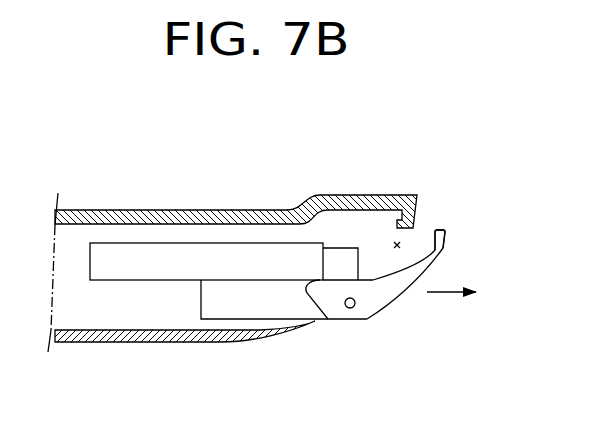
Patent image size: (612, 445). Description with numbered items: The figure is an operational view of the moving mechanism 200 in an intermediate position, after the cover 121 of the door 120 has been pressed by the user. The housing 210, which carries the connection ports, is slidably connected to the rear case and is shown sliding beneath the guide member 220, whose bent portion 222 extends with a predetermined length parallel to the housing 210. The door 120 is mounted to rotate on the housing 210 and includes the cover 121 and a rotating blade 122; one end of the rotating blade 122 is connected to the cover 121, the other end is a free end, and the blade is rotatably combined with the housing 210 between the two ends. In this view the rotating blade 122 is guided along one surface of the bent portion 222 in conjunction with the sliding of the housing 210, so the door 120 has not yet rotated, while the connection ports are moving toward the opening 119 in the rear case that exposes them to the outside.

The moving mechanism 200 is at (345, 181).
The guide member 220 is at (137, 241).
The bent portion 222 is at (223, 253).
The housing 210 is at (225, 302).
The rotating blade 122 is at (327, 302).
The door 120 is at (393, 310).
The cover 121 is at (402, 285).
The opening 119 is at (373, 280).